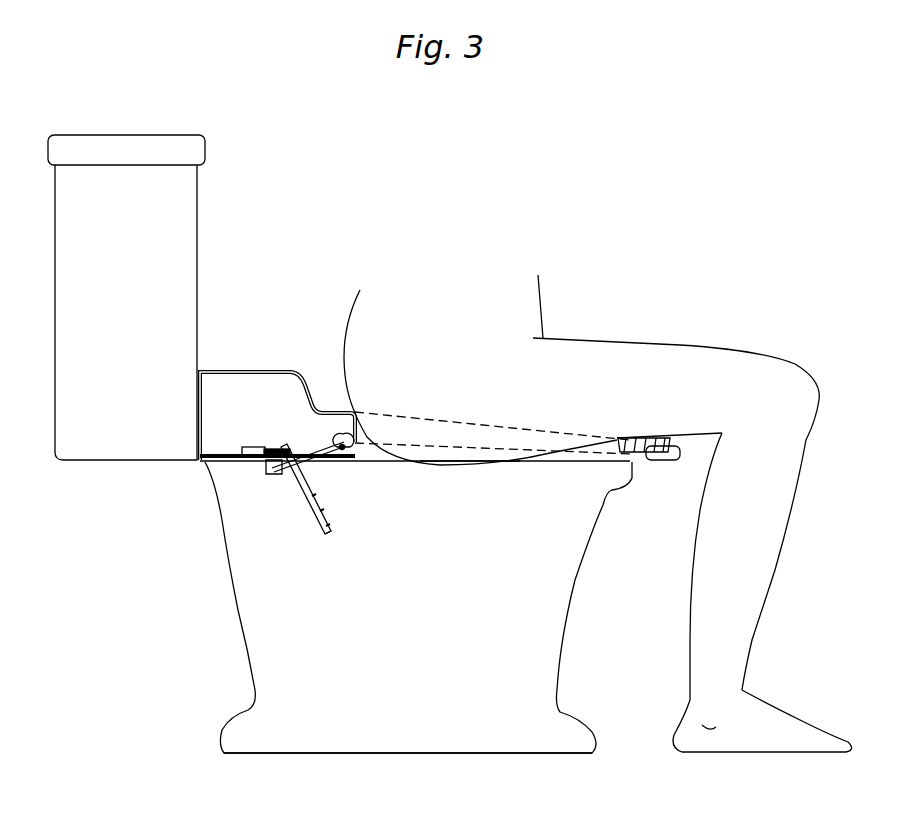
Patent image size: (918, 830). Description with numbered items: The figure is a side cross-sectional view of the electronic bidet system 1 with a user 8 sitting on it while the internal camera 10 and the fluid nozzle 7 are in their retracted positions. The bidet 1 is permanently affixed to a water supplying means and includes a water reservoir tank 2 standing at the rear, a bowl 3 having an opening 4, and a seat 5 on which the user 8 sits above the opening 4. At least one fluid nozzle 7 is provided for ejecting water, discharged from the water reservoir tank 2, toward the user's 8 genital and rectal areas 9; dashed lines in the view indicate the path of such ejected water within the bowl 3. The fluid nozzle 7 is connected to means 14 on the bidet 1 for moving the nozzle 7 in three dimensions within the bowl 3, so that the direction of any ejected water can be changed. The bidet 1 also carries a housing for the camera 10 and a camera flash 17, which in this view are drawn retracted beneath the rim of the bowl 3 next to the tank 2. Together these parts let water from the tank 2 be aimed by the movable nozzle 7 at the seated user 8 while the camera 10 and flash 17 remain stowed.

The electronic bidet system 1 is at (310, 712).
The water reservoir tank 2 is at (136, 197).
The bowl 3 is at (507, 705).
The opening 4 is at (545, 468).
The seat 5 is at (452, 425).
The fluid nozzle 7 is at (326, 534).
The user 8 is at (664, 353).
The genital and rectal areas 9 is at (455, 485).
The camera 10 is at (331, 515).
The means for moving the nozzle 14 is at (248, 447).
The camera flash 17 is at (300, 493).